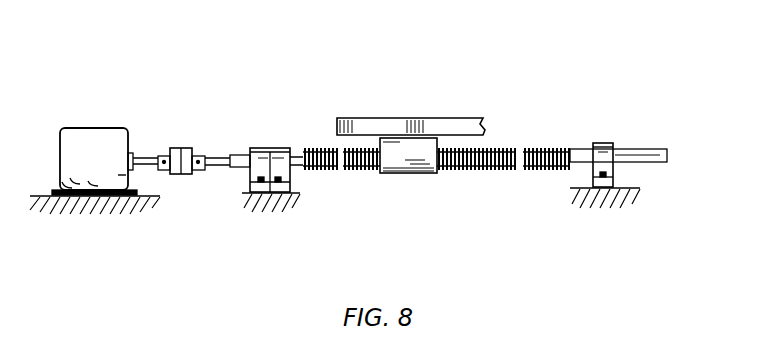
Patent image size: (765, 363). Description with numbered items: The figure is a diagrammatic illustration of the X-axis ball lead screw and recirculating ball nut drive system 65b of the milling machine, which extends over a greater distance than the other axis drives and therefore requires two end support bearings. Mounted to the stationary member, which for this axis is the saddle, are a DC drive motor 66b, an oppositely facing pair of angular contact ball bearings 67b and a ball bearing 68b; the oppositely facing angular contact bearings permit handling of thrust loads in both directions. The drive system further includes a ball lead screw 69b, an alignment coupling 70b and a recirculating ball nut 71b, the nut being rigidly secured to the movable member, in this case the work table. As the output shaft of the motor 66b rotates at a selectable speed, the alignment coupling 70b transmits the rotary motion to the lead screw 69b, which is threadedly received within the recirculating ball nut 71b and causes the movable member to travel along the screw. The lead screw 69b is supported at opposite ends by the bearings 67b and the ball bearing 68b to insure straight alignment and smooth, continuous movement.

The ball lead screw and recirculating ball nut drive system 65b is at (496, 101).
The DC drive motor 66b is at (92, 140).
The angular contact ball bearings 67b is at (263, 148).
The ball bearing 68b is at (607, 143).
The ball lead screw 69b is at (357, 170).
The alignment coupling 70b is at (195, 175).
The recirculating ball nut 71b is at (415, 173).